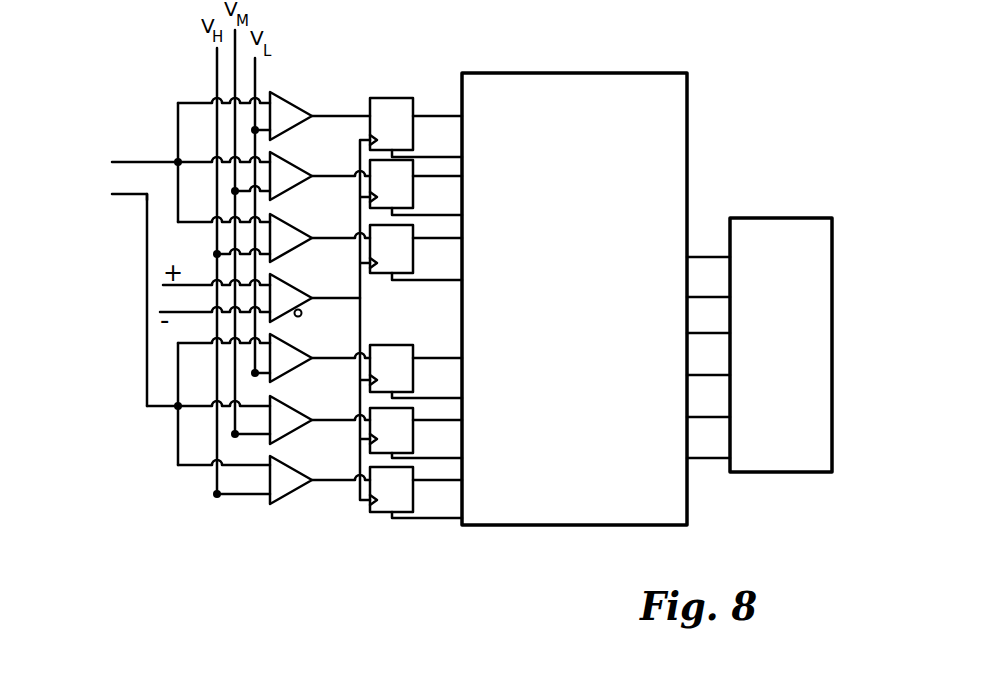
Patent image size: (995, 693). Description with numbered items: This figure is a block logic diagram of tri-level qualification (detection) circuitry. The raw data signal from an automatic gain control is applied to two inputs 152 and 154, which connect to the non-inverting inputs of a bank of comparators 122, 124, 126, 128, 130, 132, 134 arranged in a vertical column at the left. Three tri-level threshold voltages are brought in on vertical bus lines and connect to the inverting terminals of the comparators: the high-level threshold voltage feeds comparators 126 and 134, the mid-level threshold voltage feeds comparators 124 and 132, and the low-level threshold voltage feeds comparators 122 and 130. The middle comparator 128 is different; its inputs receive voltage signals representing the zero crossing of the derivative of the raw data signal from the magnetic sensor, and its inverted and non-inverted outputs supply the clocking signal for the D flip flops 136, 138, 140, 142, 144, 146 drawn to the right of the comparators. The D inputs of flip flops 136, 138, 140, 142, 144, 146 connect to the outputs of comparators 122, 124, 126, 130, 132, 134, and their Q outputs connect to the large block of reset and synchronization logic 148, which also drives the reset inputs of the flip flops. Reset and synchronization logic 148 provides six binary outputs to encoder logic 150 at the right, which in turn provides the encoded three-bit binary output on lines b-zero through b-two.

The comparator 122 is at (290, 100).
The comparator 124 is at (292, 158).
The comparator 126 is at (292, 220).
The comparator 128 is at (292, 282).
The comparator 130 is at (292, 346).
The comparator 132 is at (292, 400).
The comparator 134 is at (294, 460).
The D flip flop 136 is at (418, 131).
The D flip flop 138 is at (413, 197).
The D flip flop 140 is at (432, 256).
The D flip flop 142 is at (406, 345).
The D flip flop 144 is at (413, 424).
The D flip flop 146 is at (381, 514).
The reset and synchronization logic 148 is at (555, 525).
The encoder logic 150 is at (797, 359).
The input 152 is at (166, 150).
The input 154 is at (107, 209).